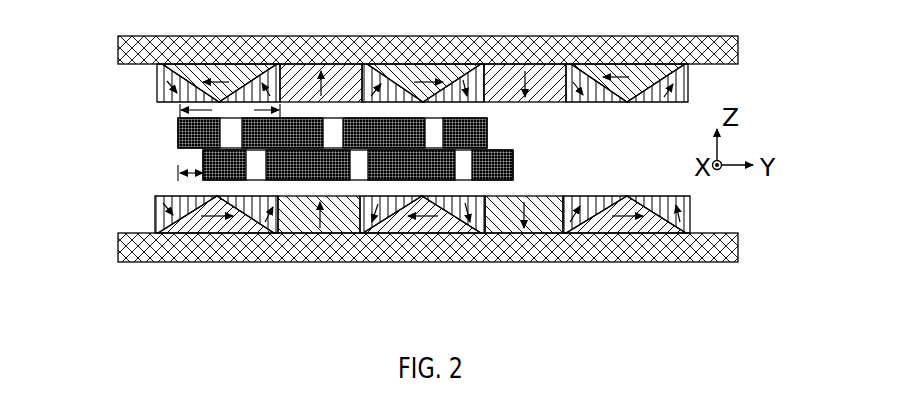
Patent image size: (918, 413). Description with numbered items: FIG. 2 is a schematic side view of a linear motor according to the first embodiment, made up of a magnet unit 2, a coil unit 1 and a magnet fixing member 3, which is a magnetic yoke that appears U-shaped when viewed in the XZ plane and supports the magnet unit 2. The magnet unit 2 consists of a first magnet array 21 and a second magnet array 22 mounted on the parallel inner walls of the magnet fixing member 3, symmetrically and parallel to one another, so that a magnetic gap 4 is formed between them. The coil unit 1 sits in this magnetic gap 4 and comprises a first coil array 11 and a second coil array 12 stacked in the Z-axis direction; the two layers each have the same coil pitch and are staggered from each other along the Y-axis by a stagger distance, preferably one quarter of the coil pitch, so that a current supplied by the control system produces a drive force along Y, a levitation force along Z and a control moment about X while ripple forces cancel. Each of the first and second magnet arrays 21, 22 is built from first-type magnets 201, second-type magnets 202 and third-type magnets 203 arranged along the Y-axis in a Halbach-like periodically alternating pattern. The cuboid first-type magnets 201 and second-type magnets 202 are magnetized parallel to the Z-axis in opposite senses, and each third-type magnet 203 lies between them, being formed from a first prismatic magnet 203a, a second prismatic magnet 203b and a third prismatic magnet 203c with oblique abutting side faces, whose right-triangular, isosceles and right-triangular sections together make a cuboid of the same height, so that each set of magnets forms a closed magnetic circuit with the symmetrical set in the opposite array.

The coil unit 1 is at (177, 132).
The first coil array 11 is at (487, 130).
The second coil array 12 is at (513, 162).
The magnet unit 2 is at (157, 85).
The first magnet array 21 is at (688, 85).
The second magnet array 22 is at (481, 252).
The magnet fixing member 3 is at (128, 56).
The magnetic gap 4 is at (165, 161).
The first-type magnet 201 is at (314, 242).
The second-type magnet 202 is at (497, 218).
The third-type magnet 203 is at (217, 214).
The first prismatic magnet 203a is at (562, 222).
The second prismatic magnet 203b is at (688, 206).
The third prismatic magnet 203c is at (637, 216).